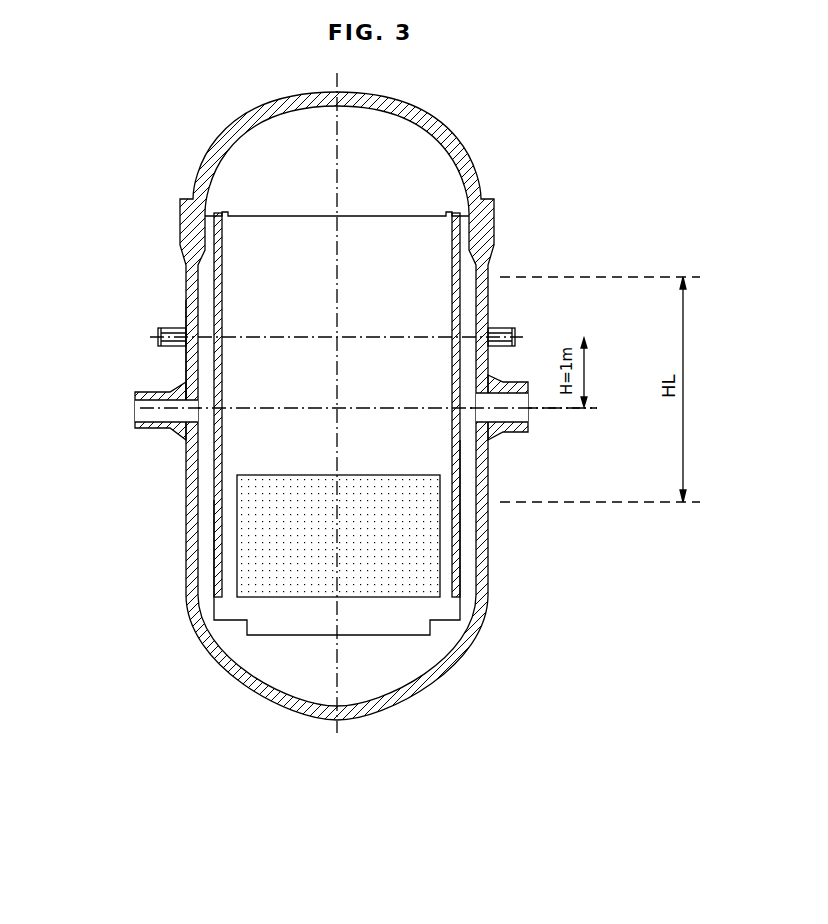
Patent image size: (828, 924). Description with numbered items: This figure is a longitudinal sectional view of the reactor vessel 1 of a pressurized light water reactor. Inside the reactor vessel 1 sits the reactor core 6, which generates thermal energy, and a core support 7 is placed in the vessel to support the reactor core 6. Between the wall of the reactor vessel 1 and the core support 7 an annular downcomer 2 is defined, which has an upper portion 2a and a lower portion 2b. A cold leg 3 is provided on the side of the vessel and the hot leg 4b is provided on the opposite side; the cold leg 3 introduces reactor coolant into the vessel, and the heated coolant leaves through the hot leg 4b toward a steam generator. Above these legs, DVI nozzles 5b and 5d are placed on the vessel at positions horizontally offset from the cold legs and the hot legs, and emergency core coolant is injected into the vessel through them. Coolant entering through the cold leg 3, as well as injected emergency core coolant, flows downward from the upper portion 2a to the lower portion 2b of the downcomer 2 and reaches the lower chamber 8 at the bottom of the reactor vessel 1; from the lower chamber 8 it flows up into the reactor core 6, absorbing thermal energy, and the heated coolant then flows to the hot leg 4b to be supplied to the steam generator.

The reactor vessel 1 is at (187, 500).
The downcomer 2 is at (208, 453).
The upper portion of the downcomer 2a is at (187, 362).
The lower portion of the downcomer 2b is at (205, 572).
The cold leg 3 is at (150, 413).
The second hot leg 4b is at (507, 420).
The second DVI nozzle 5b is at (168, 334).
The fourth DVI nozzle 5d is at (502, 328).
The reactor core 6 is at (338, 536).
The core support 7 is at (458, 528).
The lower chamber 8 is at (295, 675).